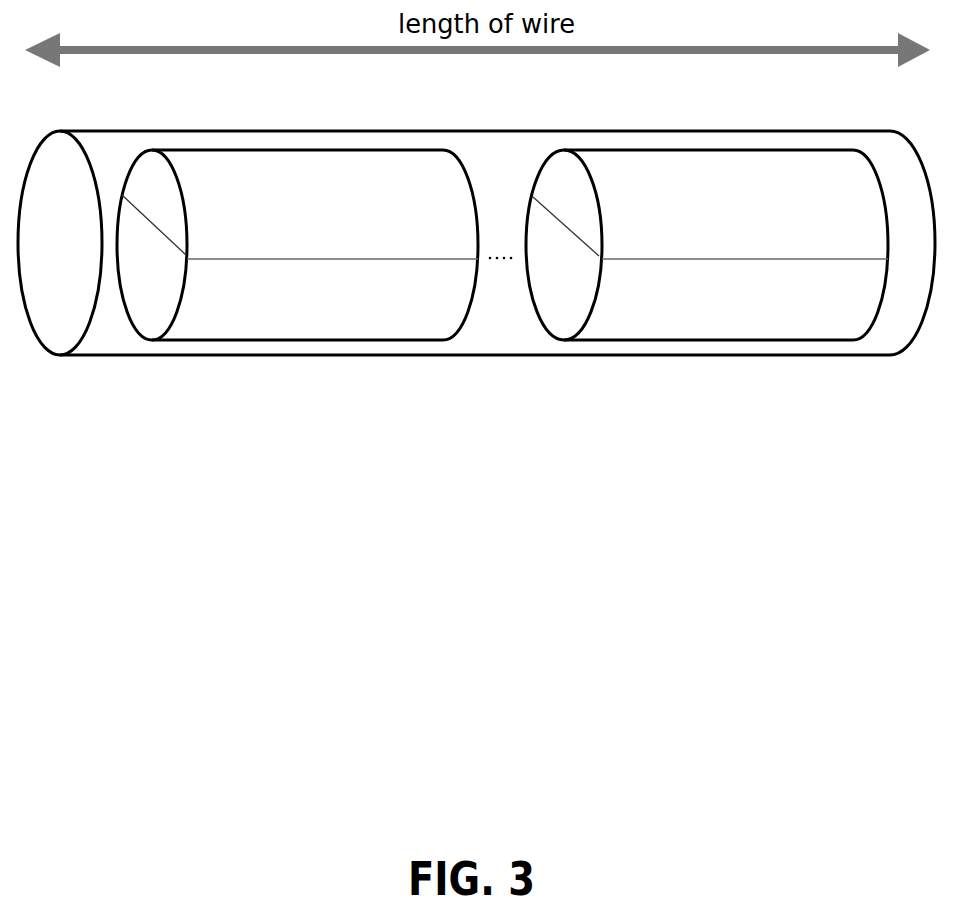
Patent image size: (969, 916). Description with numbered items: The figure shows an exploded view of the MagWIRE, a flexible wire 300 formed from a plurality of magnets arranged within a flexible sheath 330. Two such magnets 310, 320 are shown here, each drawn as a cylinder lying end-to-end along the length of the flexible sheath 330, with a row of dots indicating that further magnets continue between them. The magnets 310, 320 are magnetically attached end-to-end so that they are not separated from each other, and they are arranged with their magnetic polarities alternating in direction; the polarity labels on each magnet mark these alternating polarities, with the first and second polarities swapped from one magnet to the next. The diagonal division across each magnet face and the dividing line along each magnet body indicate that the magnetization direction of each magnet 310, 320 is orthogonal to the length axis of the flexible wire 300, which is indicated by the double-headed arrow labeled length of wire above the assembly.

The flexible wire 300 is at (476, 366).
The magnet 310 is at (225, 338).
The magnet 320 is at (655, 342).
The flexible sheath 330 is at (487, 353).